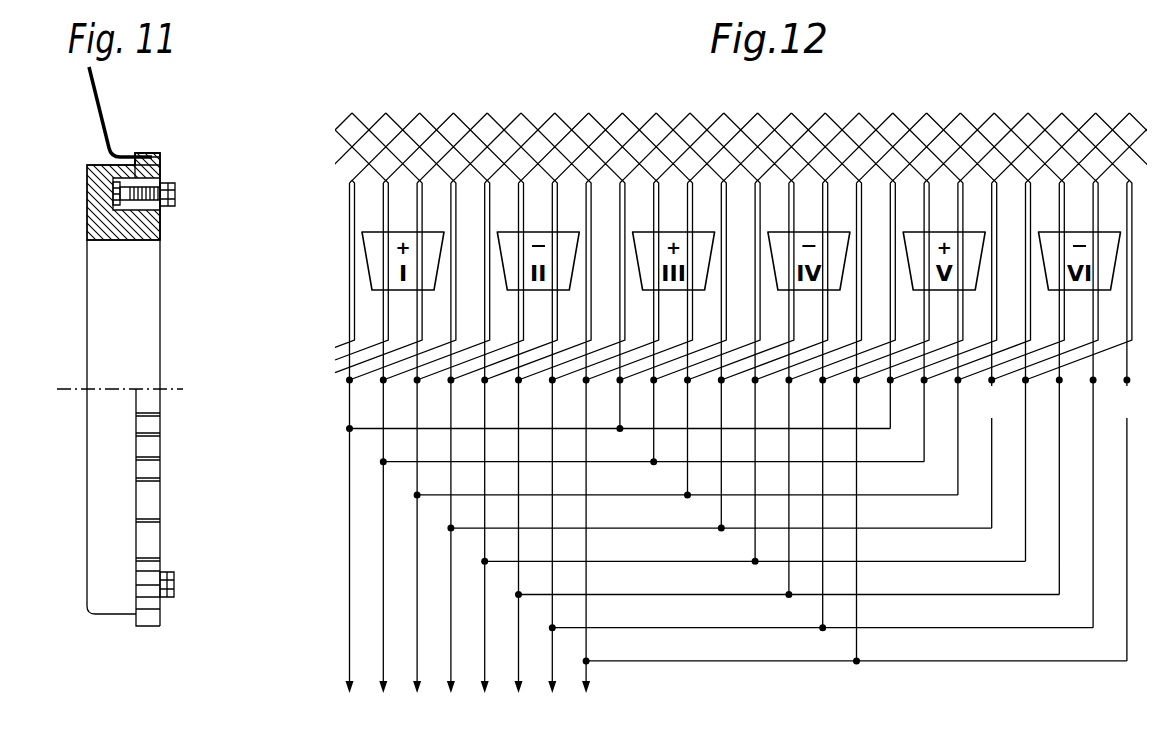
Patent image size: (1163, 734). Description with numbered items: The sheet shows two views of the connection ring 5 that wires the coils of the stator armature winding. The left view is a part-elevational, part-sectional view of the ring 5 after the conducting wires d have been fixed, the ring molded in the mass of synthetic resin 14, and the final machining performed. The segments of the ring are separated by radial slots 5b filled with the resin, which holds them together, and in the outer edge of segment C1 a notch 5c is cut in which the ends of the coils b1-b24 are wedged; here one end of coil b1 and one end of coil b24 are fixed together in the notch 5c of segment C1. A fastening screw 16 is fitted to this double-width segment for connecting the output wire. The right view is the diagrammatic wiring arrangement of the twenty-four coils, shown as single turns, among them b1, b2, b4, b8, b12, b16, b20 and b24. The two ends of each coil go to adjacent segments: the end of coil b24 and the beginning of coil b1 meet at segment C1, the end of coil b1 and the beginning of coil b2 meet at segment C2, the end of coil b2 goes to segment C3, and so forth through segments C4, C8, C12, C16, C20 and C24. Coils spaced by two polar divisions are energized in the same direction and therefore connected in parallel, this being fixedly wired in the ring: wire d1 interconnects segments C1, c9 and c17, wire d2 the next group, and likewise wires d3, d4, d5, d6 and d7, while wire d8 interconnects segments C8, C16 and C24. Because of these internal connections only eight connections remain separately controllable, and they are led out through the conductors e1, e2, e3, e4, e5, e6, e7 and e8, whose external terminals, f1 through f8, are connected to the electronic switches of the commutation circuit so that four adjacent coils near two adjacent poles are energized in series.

In FIG. 11, the armature winding coils b1-b24 is at (97, 100).
In FIG. 11, the notch 5c is at (156, 151).
In FIG. 11, the conducting wires d is at (114, 192).
In FIG. 11, the segment C1 is at (161, 176).
In FIG. 12, the segment C1 is at (339, 403).
In FIG. 11, the synthetic resin 14 is at (98, 220).
In FIG. 11, the screw 16 is at (173, 201).
In FIG. 11, the connection ring 5 is at (161, 308).
In FIG. 11, the radial slots 5b is at (148, 480).
In FIG. 12, the coil b24 is at (391, 116).
In FIG. 12, the coil b1 is at (425, 116).
In FIG. 12, the coil b2 is at (459, 116).
In FIG. 12, the coil b4 is at (527, 116).
In FIG. 12, the coil b8 is at (661, 116).
In FIG. 12, the coil b12 is at (797, 116).
In FIG. 12, the coil b16 is at (934, 116).
In FIG. 12, the coil b20 is at (1085, 96).
In FIG. 12, the segment C2 is at (372, 419).
In FIG. 12, the segment C3 is at (406, 436).
In FIG. 12, the segment C4 is at (439, 453).
In FIG. 12, the segment C8 is at (574, 519).
In FIG. 12, the segment C12 is at (706, 453).
In FIG. 12, the segment C16 is at (841, 519).
In FIG. 12, the segment C20 is at (983, 453).
In FIG. 12, the segment C24 is at (1119, 519).
In FIG. 12, the wire d1 is at (372, 431).
In FIG. 12, the wire d2 is at (406, 464).
In FIG. 12, the wire d3 is at (439, 497).
In FIG. 12, the wire d4 is at (473, 530).
In FIG. 12, the wire d5 is at (507, 564).
In FIG. 12, the wire d6 is at (541, 597).
In FIG. 12, the wire d7 is at (575, 630).
In FIG. 12, the wire d8 is at (616, 663).
In FIG. 12, the conductor e1 is at (349, 640).
In FIG. 12, the conductor e2 is at (383, 640).
In FIG. 12, the conductor e3 is at (417, 640).
In FIG. 12, the conductor e4 is at (450, 640).
In FIG. 12, the conductor e5 is at (484, 640).
In FIG. 12, the conductor e6 is at (518, 663).
In FIG. 12, the conductor e7 is at (552, 678).
In FIG. 12, the conductor e8 is at (584, 681).
In FIG. 12, the external terminal f1 is at (350, 703).
In FIG. 12, the external terminal f8 is at (588, 703).